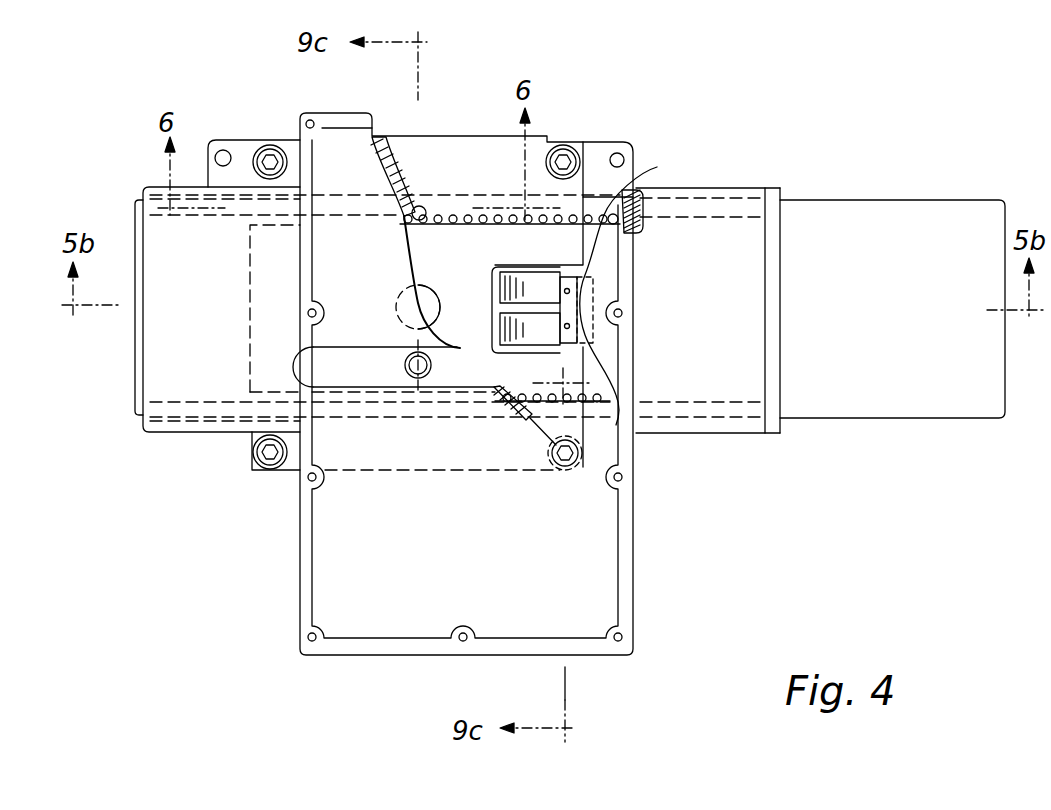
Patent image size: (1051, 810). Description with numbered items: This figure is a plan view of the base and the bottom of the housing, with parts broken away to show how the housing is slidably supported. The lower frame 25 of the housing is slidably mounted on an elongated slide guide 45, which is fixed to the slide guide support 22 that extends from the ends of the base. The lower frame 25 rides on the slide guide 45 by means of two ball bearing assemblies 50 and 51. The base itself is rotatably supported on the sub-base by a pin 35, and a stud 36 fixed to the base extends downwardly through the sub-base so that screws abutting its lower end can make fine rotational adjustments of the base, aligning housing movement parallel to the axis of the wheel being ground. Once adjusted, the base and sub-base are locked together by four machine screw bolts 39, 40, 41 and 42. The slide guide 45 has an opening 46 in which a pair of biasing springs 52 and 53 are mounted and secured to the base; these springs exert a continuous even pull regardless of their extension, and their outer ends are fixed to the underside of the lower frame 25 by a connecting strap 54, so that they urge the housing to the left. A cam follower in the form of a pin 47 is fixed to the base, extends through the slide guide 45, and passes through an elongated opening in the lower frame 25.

The dust cover 22 is at (862, 200).
The lower frame 25 is at (600, 582).
The pin 35 is at (416, 284).
The stud 36 is at (426, 207).
The machine screw bolt 39 is at (568, 152).
The machine screw bolt 40 is at (268, 148).
The machine screw bolt 41 is at (268, 469).
The machine screw bolt 42 is at (560, 462).
The slide guide 45 is at (451, 235).
The opening 46 is at (493, 288).
The cam follower pin 47 is at (410, 352).
The ball bearing assembly 50 is at (632, 287).
The ball bearing assembly 51 is at (593, 403).
The biasing spring 52 is at (508, 297).
The biasing spring 53 is at (508, 325).
The connecting strap 54 is at (568, 280).